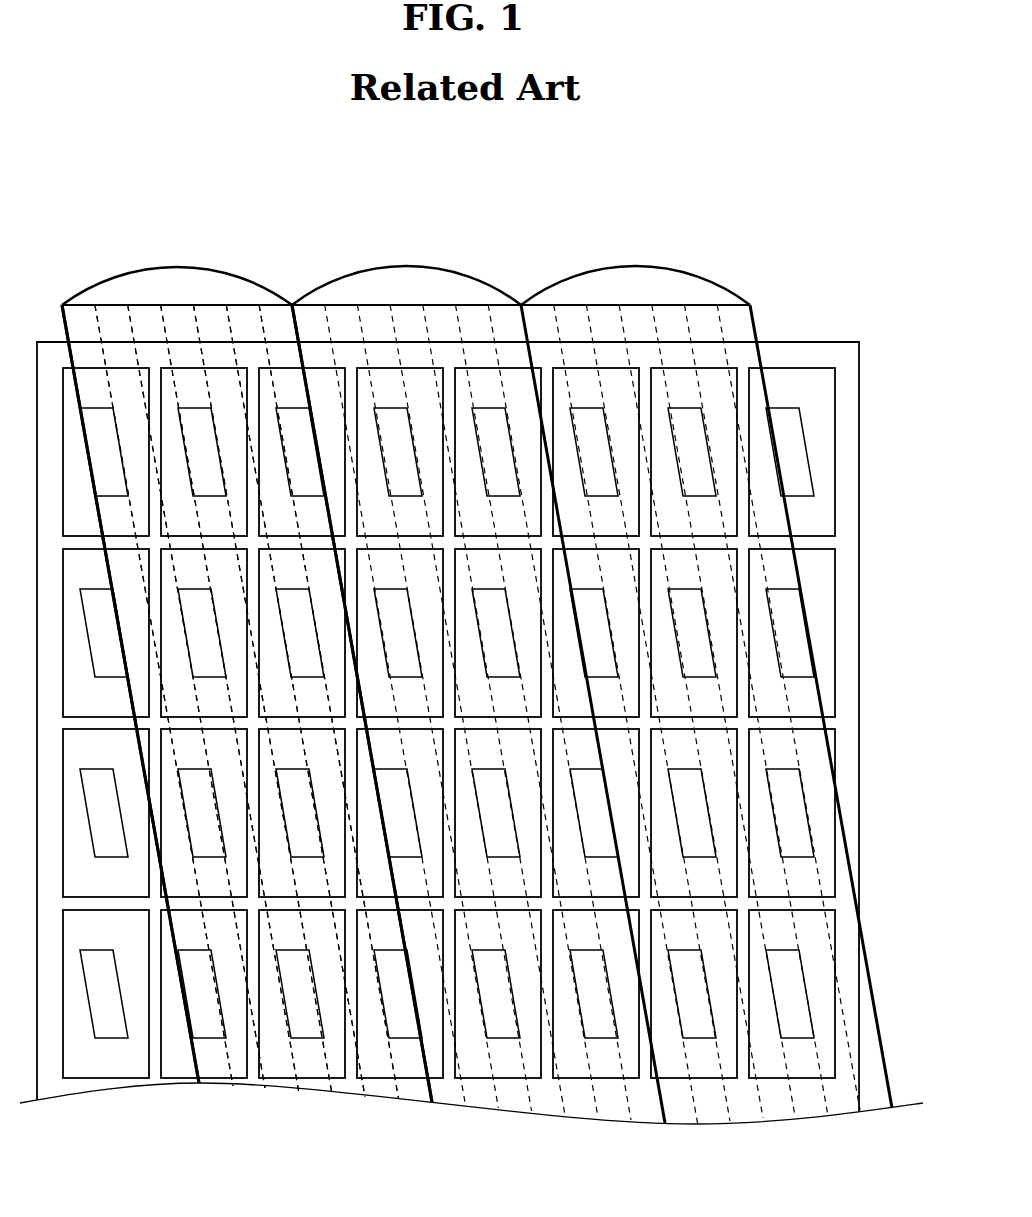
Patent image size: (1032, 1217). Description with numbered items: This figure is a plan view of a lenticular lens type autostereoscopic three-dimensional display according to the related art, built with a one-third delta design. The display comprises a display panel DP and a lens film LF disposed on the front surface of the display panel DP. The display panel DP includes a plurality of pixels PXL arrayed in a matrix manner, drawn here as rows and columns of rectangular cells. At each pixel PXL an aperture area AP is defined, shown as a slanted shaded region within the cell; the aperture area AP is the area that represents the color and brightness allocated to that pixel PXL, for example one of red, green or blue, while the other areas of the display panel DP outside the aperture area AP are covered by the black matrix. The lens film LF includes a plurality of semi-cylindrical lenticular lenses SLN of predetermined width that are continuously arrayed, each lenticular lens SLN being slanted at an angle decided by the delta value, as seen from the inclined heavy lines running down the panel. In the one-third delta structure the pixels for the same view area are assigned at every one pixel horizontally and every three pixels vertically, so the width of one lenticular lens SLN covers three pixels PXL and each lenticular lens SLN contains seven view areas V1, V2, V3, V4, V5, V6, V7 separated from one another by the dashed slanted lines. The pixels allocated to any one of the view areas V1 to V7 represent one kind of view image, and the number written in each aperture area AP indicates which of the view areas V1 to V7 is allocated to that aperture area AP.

The first view area V1 is at (80, 316).
The second view area V2 is at (112, 316).
The third view area V3 is at (144, 316).
The fourth view area V4 is at (176, 316).
The fifth view area V5 is at (208, 316).
The sixth view area V6 is at (241, 316).
The seventh view area V7 is at (275, 316).
The lenticular lens SLN is at (397, 265).
The lens film LF is at (764, 323).
The pixel PXL is at (835, 421).
The aperture area AP is at (816, 470).
The display panel DP is at (860, 617).